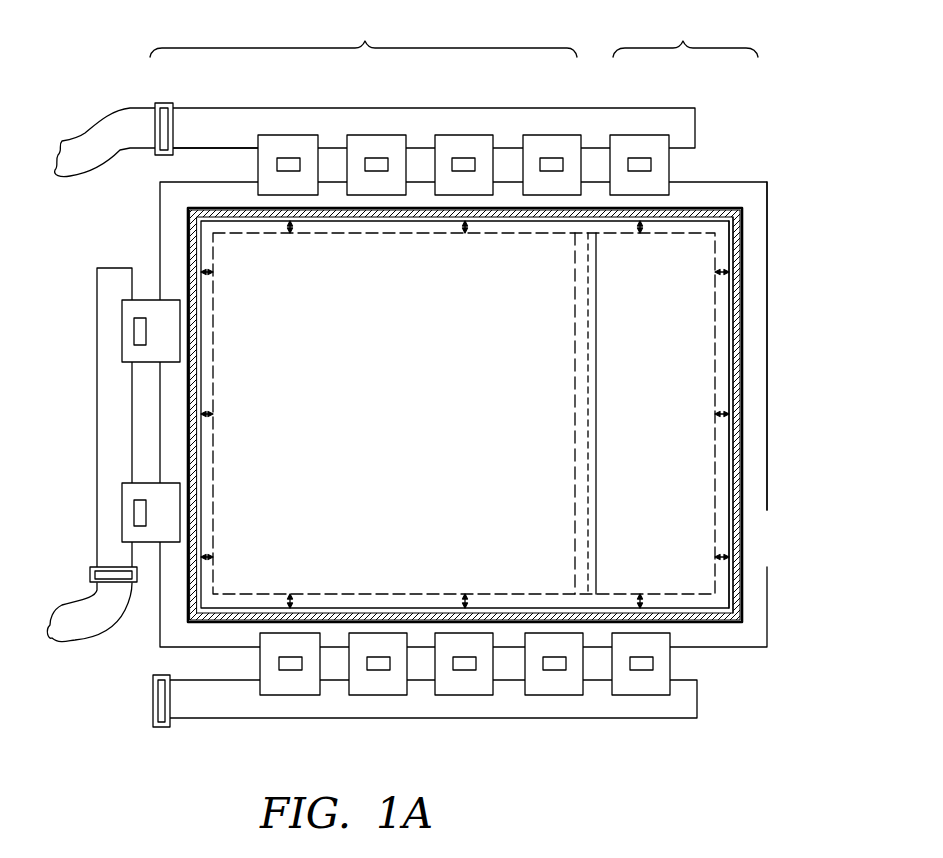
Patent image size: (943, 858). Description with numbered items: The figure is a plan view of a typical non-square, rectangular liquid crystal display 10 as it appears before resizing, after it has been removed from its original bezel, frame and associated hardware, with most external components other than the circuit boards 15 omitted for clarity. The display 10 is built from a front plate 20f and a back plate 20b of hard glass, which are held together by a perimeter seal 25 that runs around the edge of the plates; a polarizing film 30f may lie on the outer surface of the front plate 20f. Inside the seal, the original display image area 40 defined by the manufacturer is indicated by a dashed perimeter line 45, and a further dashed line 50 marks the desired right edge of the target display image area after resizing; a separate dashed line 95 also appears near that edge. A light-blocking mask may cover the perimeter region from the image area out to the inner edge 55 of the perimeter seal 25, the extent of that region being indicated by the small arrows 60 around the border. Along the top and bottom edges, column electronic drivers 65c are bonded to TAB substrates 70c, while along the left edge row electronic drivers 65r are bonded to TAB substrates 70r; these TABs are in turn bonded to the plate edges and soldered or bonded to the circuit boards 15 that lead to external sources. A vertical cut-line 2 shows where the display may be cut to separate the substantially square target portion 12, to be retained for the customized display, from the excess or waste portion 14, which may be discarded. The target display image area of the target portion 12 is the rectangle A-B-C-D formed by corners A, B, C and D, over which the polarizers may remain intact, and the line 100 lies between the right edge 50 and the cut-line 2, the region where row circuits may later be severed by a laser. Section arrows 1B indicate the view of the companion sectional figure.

The liquid crystal display 10 is at (757, 158).
The target portion 12 is at (363, 36).
The excess portion 14 is at (685, 36).
The circuit boards 15 is at (690, 127).
The front plate 20f is at (745, 210).
The back plate 20b is at (755, 268).
The perimeter seal 25 is at (210, 207).
The polarizing film 30f is at (742, 236).
The display image area 40 is at (690, 382).
The dashed perimeter line 45 is at (718, 297).
The desired right edge 50 is at (572, 323).
The inner edge of perimeter seal 55 is at (730, 328).
The arrows 60 is at (210, 275).
The column electronic drivers 65c is at (292, 160).
The column TAB substrates 70c is at (272, 142).
The row electronic drivers 65r is at (135, 330).
The row TAB substrates 70r is at (128, 355).
The boundary line 95 is at (588, 296).
The laser 100 is at (592, 412).
The cut-line 2 is at (596, 765).
The section view 1B is at (87, 511).
The corner of rectangle A-B-C-D A is at (215, 377).
The corner of rectangle A-B-C-D B is at (372, 234).
The corner of rectangle A-B-C-D C is at (573, 383).
The corner of rectangle A-B-C- D is at (390, 594).